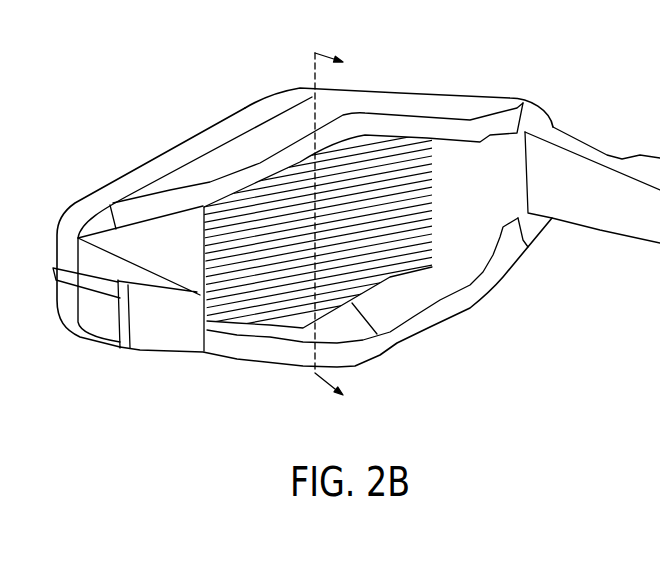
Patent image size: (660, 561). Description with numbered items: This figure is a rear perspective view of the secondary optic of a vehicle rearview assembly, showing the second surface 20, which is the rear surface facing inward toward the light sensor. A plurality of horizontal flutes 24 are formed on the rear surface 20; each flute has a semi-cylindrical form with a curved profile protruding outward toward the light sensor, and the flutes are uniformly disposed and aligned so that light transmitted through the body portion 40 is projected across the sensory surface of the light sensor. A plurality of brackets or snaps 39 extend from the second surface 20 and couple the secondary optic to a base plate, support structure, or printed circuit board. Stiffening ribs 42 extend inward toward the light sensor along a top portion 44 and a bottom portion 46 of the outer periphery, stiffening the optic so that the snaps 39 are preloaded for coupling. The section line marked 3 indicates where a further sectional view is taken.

The second surface 20 is at (487, 220).
The horizontal flutes 24 is at (393, 248).
The snaps 39 is at (607, 155).
The body portion 40 is at (235, 124).
The stiffening ribs 42 is at (348, 122).
The top portion 44 is at (296, 84).
The bottom portion 46 is at (219, 365).
The section line 3- 3 is at (329, 223).